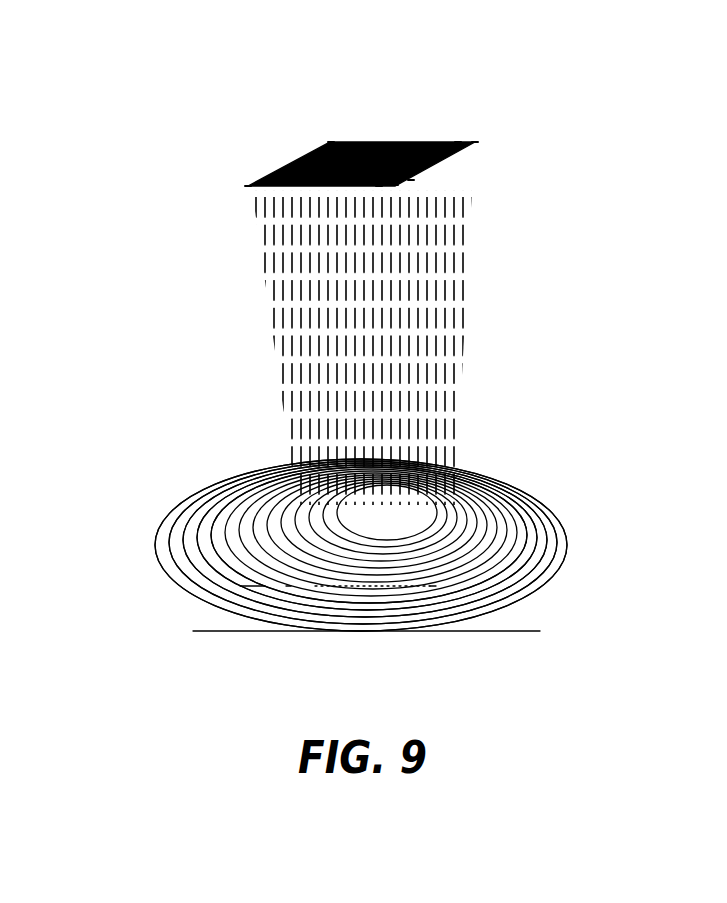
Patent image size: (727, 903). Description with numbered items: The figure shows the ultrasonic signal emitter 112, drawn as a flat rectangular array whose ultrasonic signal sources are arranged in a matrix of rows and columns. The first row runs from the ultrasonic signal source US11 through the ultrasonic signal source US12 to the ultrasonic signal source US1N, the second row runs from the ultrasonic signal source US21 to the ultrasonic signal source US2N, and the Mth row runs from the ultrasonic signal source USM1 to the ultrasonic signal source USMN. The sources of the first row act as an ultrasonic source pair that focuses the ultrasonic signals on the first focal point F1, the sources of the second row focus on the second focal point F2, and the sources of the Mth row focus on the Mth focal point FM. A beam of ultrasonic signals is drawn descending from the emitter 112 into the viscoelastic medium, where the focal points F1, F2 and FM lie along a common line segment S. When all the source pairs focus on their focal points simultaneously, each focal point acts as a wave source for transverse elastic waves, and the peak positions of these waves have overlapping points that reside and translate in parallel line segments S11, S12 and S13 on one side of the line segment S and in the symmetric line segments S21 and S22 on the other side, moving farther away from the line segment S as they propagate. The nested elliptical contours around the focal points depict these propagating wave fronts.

The ultrasonic signal emitter 112 is at (402, 140).
The ultrasonic signal source USMN is at (330, 140).
The ultrasonic signal source US2N is at (458, 140).
The ultrasonic signal source US1N is at (478, 142).
The ultrasonic signal source US12 is at (412, 180).
The ultrasonic signal source US11 is at (395, 185).
The ultrasonic signal source US21 is at (378, 220).
The ultrasonic signal source USM1 is at (305, 103).
The line segment S is at (265, 544).
The line segment S13 is at (310, 458).
The line segment S12 is at (305, 483).
The line segment S11 is at (305, 501).
The line segment S21 is at (457, 586).
The line segment S22 is at (217, 604).
The first focal point F1 is at (262, 578).
The second focal point F2 is at (298, 578).
The Mth focal point FM is at (443, 578).